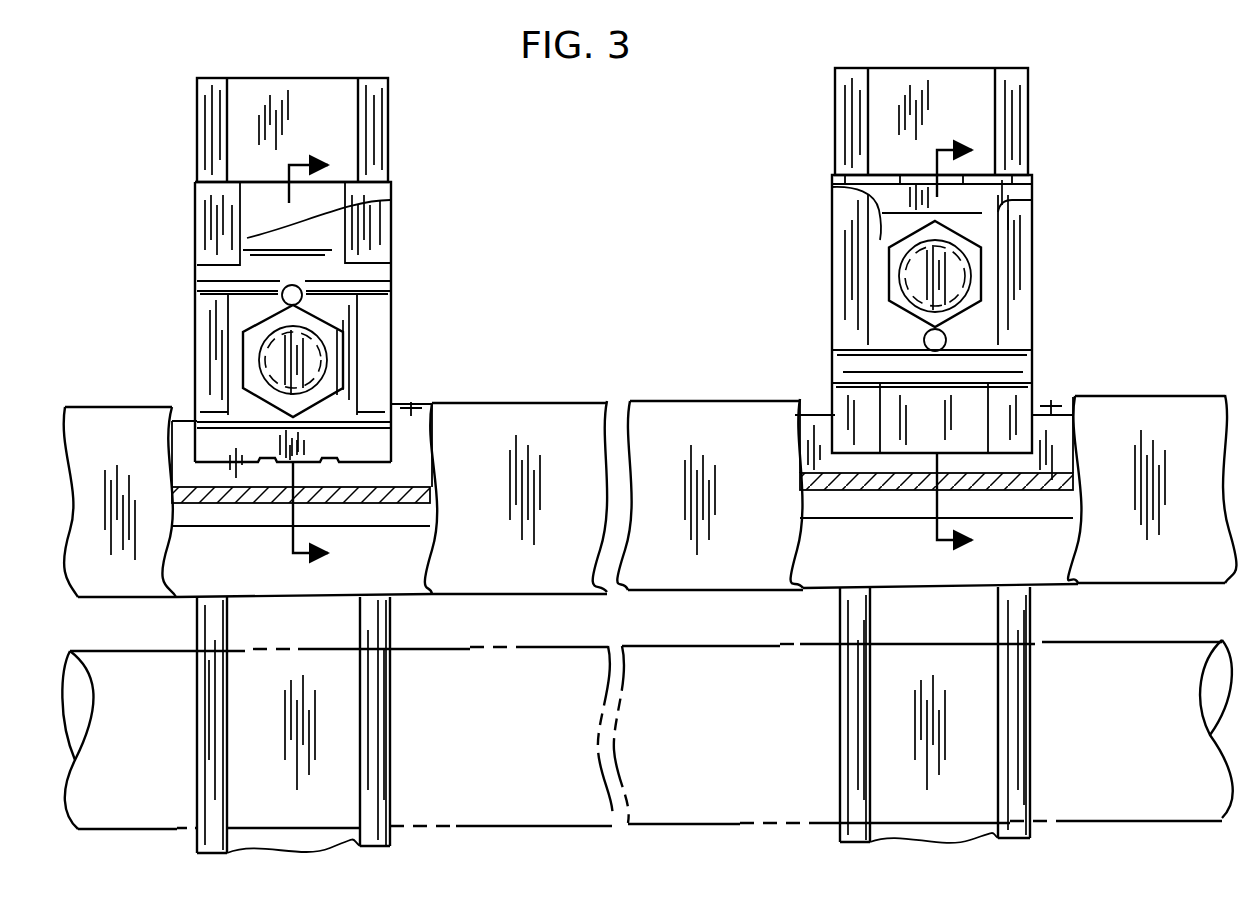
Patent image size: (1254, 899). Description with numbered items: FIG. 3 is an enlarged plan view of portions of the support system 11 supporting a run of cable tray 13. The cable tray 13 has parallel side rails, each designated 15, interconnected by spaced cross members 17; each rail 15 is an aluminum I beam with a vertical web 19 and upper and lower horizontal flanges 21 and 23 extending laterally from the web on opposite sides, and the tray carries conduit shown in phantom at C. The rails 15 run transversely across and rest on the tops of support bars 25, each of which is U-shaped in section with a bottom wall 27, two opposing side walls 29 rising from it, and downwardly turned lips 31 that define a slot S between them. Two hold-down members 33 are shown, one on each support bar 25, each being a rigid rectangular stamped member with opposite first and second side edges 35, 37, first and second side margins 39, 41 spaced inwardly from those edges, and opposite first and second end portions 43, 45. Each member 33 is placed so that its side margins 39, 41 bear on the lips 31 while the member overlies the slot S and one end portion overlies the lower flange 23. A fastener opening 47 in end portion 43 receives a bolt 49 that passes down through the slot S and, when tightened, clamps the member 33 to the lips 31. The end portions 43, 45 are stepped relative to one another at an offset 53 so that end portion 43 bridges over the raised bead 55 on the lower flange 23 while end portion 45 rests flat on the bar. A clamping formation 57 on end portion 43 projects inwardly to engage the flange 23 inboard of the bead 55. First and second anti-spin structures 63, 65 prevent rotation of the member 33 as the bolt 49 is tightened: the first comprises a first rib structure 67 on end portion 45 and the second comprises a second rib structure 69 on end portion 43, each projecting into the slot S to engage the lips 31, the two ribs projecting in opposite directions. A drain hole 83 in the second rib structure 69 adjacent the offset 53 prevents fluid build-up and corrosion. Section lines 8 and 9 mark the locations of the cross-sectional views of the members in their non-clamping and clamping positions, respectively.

The section line 8- 8 is at (956, 347).
The section line 9- 9 is at (310, 361).
The support system 11 is at (557, 212).
The cable tray 13 is at (1152, 396).
The side rail 15 is at (136, 407).
The cross member 17 is at (197, 835).
The vertical web 19 is at (1032, 520).
The upper horizontal flange 21 is at (102, 506).
The lower horizontal flange 23 is at (206, 574).
The support bar 25 is at (388, 76).
The bottom wall 27 is at (252, 100).
The side wall 29 is at (197, 115).
The downwardly turned lip 31 is at (212, 148).
The hold-down member 33 is at (397, 186).
The first side edge 35 is at (391, 252).
The second side edge 37 is at (197, 255).
The first side margin 39 is at (391, 280).
The second side margin 41 is at (210, 282).
The first end portion 43 is at (370, 448).
The second end portion 45 is at (235, 180).
The fastener opening 47 is at (243, 378).
The bolt 49 is at (327, 340).
The offset 53 is at (243, 298).
The bead 55 is at (408, 404).
The clamping formation 57 is at (247, 482).
The first anti-spin structure 63 is at (276, 218).
The second anti-spin structure 65 is at (968, 201).
The first rib structure 67 is at (390, 200).
The second rib structure 69 is at (832, 187).
The drain hole 83 is at (303, 296).
The conduit C is at (1117, 642).
The slot S is at (345, 838).